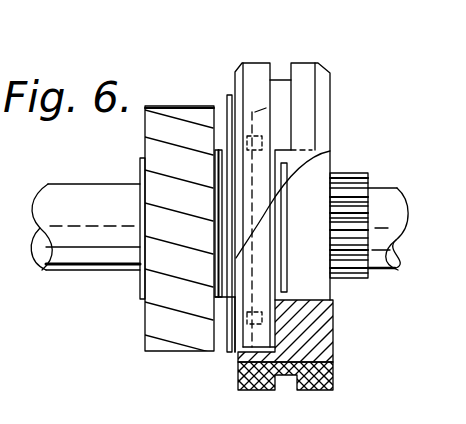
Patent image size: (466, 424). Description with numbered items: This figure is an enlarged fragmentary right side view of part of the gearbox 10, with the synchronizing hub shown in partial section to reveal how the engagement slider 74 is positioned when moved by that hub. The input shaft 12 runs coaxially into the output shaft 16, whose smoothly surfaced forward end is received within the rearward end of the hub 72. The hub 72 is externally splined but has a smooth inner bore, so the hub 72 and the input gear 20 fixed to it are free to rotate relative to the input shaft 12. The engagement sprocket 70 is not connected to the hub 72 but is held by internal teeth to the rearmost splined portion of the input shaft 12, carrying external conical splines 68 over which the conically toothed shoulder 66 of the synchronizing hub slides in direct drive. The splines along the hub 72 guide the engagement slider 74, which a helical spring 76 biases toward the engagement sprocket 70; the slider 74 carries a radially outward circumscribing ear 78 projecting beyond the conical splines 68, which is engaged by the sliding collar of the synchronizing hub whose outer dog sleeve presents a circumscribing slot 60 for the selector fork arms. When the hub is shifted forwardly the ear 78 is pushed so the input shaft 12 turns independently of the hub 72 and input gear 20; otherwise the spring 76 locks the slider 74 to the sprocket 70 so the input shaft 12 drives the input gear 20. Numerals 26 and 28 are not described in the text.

The gearbox 10 is at (111, 308).
The input shaft 12 is at (83, 271).
The output shaft 16 is at (384, 197).
The input gear 20 is at (165, 334).
The key (partially visible, adjacent figure) 26 is at (105, 5).
The shaft element (partially visible, adjacent figure) 28 is at (45, 8).
The circumscribing slot 60 is at (291, 62).
The conically toothed shoulder 66 is at (246, 378).
The conical splines 68 is at (266, 108).
The engagement sprocket 70 is at (276, 303).
The hub 72 is at (143, 162).
The engagement slider 74 is at (233, 353).
The helical spring 76 is at (214, 152).
The circumscribing ear 78 is at (228, 96).